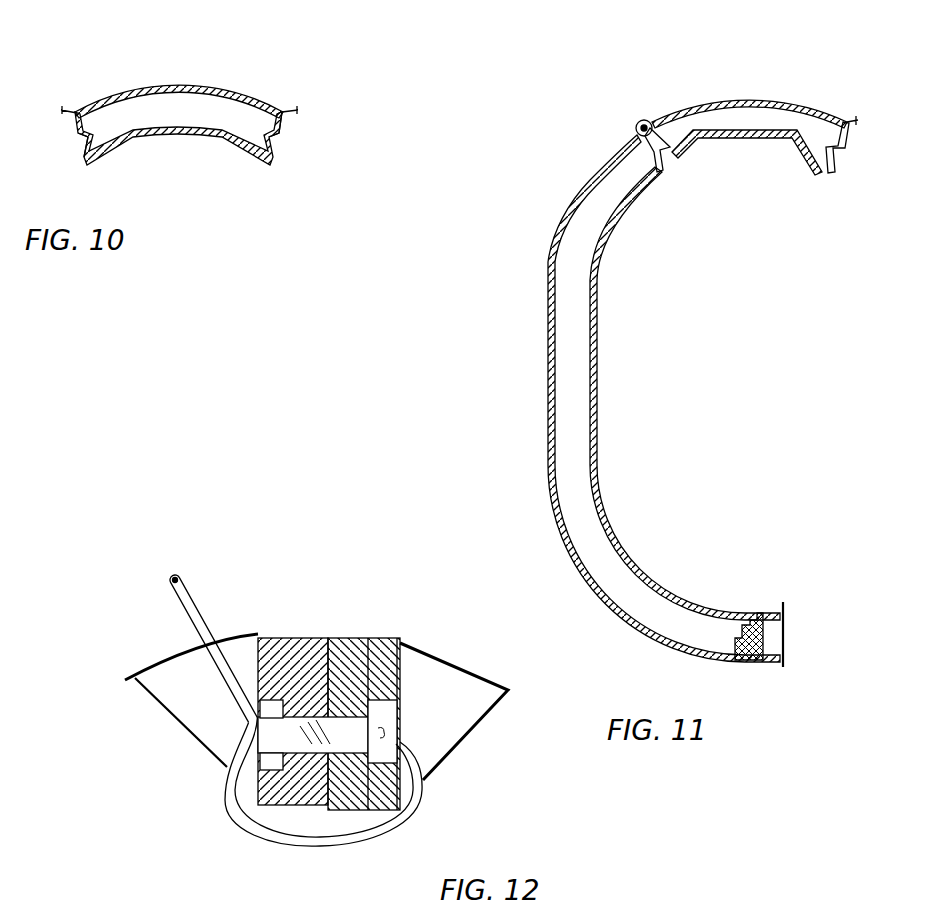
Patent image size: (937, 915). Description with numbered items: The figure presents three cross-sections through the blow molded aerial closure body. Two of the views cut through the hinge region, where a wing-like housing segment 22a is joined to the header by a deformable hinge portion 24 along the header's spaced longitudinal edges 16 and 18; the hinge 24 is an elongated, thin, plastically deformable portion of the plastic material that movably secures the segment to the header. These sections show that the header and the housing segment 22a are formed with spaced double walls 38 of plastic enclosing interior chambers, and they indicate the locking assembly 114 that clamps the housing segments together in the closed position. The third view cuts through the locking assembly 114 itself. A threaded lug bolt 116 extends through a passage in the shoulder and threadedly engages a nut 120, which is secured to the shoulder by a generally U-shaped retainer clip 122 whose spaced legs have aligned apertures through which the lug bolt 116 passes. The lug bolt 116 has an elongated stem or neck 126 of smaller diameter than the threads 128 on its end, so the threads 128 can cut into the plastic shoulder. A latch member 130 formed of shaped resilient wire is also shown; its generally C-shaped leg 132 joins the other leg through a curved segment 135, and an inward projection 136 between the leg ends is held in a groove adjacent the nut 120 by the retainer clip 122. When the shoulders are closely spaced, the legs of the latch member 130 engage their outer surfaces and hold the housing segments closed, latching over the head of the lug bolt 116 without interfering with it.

In FIG. 10, the locking assembly 114 is at (183, 86).
In FIG. 11, the locking assembly 114 is at (750, 100).
In FIG. 10, the hinge portion 24 is at (73, 110).
In FIG. 11, the hinge portion 24 is at (641, 120).
In FIG. 10, the longitudinal edge 16 is at (77, 138).
In FIG. 11, the longitudinal edge 16 is at (663, 170).
In FIG. 10, the longitudinal edge 18 is at (283, 141).
In FIG. 11, the longitudinal edge 18 is at (840, 150).
In FIG. 10, the double walls 38 is at (176, 92).
In FIG. 11, the double walls 38 is at (553, 360).
In FIG. 11, the housing segment 22a is at (548, 297).
In FIG. 12, the nut 120 is at (405, 650).
In FIG. 12, the stem or neck 126 is at (305, 700).
In FIG. 12, the threads 128 is at (343, 640).
In FIG. 12, the threaded lug bolt 116 is at (270, 737).
In FIG. 12, the projection 136 is at (382, 740).
In FIG. 12, the C-shaped leg 132 is at (182, 601).
In FIG. 12, the retainer clip 122 is at (370, 816).
In FIG. 12, the curved segment 135 is at (177, 578).
In FIG. 12, the latch member 130 is at (217, 598).